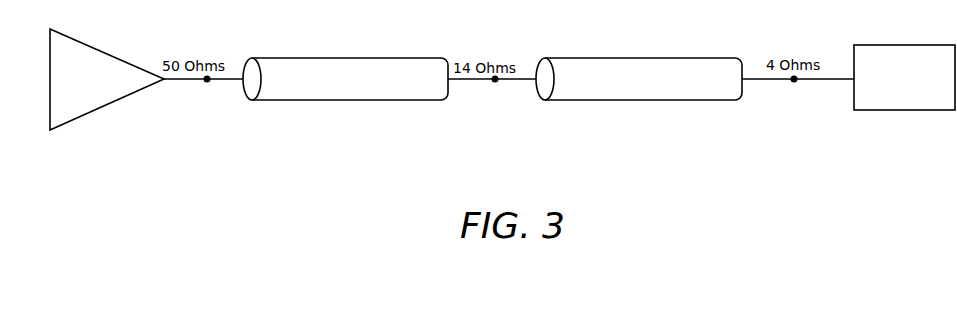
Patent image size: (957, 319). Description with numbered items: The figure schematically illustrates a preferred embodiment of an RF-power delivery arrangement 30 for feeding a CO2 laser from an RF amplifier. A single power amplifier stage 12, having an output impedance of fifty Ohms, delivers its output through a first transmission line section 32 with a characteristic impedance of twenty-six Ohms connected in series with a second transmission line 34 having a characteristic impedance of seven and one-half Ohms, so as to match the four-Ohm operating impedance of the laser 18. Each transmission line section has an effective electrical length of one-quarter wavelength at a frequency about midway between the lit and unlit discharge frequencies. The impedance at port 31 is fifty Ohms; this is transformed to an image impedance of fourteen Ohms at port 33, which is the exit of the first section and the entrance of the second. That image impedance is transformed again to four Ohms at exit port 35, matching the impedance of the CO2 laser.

The power amplifier stage 12 is at (100, 110).
The laser 18 is at (917, 110).
The RF-power delivery arrangement 30 is at (623, 177).
The port 31 is at (208, 82).
The first transmission line section 32 is at (320, 100).
The port 33 is at (496, 82).
The second transmission line 34 is at (653, 100).
The exit port 35 is at (795, 82).